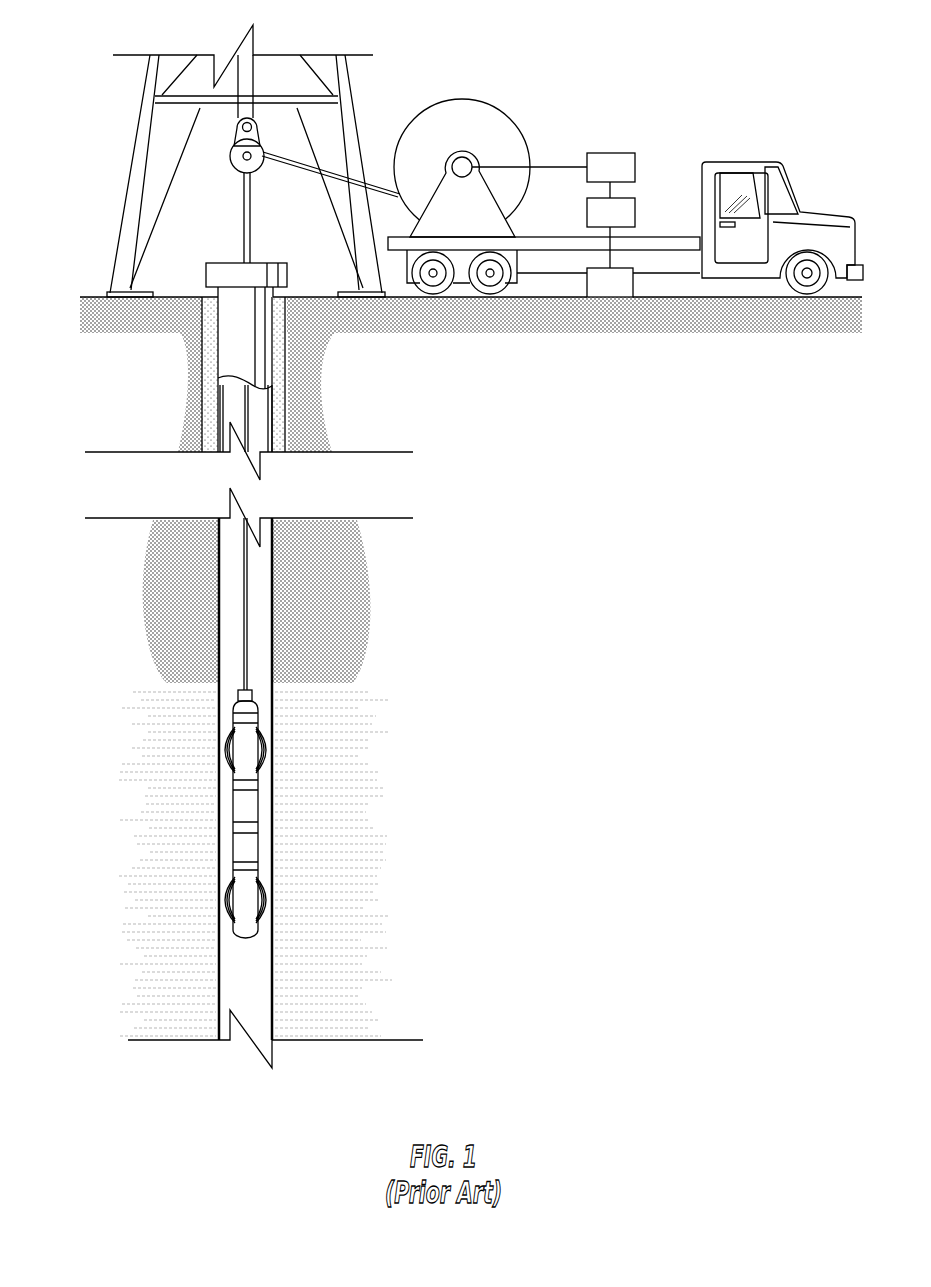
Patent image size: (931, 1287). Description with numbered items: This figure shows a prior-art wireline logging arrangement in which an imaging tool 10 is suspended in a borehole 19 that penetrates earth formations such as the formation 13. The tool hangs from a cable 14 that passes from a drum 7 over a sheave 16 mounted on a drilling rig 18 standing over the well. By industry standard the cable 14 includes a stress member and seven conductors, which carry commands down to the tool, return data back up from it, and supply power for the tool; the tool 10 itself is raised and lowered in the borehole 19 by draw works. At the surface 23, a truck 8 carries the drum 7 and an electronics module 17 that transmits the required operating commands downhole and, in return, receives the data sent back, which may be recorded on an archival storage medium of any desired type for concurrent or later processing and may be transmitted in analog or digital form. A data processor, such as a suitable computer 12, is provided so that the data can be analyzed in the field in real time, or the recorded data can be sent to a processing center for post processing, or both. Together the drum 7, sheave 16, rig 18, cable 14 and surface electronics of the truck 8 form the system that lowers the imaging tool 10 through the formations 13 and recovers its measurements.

The drum 7 is at (462, 98).
The truck 8 is at (550, 78).
The imaging tool 10 is at (268, 795).
The computer 12 is at (635, 212).
The earth formations 13 is at (445, 572).
The cable 14 is at (248, 243).
The sheave 16 is at (240, 173).
The electronics module 17 is at (620, 153).
The drilling rig 18 is at (138, 110).
The borehole 19 is at (263, 607).
The surface 23 is at (93, 297).